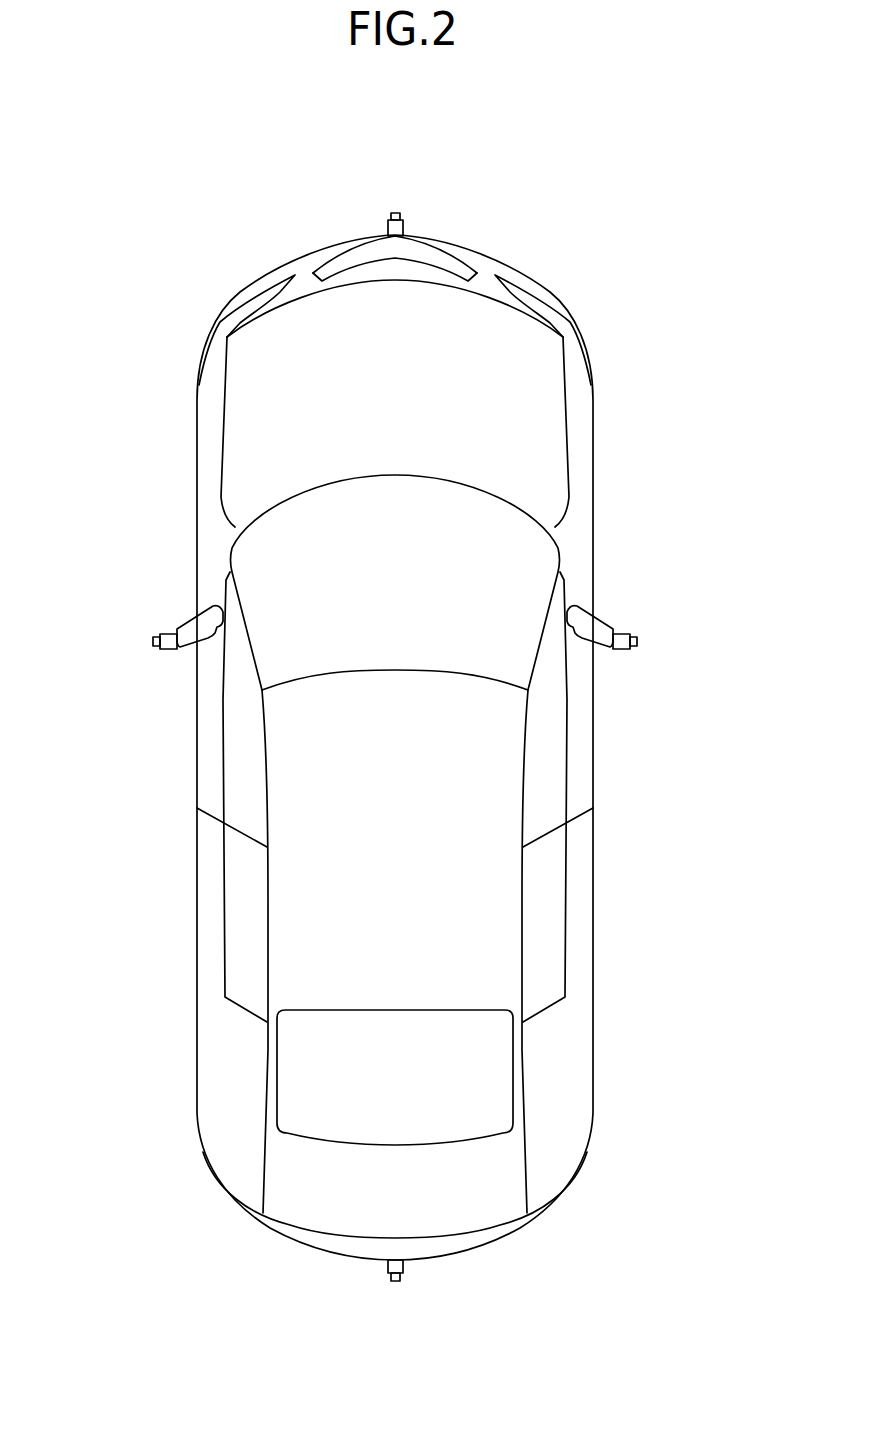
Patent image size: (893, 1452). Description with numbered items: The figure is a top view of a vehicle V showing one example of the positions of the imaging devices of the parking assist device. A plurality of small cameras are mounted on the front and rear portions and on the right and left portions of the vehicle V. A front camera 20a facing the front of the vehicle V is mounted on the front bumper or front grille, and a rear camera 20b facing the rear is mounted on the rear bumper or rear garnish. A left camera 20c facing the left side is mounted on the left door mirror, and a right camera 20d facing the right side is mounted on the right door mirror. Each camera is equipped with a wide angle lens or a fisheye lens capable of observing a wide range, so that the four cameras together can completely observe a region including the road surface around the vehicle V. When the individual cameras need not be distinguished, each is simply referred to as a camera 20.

The vehicle V is at (558, 287).
The camera 20 is at (401, 751).
The front camera 20a is at (388, 228).
The rear camera 20b is at (405, 1267).
The left camera 20c is at (172, 631).
The right camera 20d is at (621, 633).